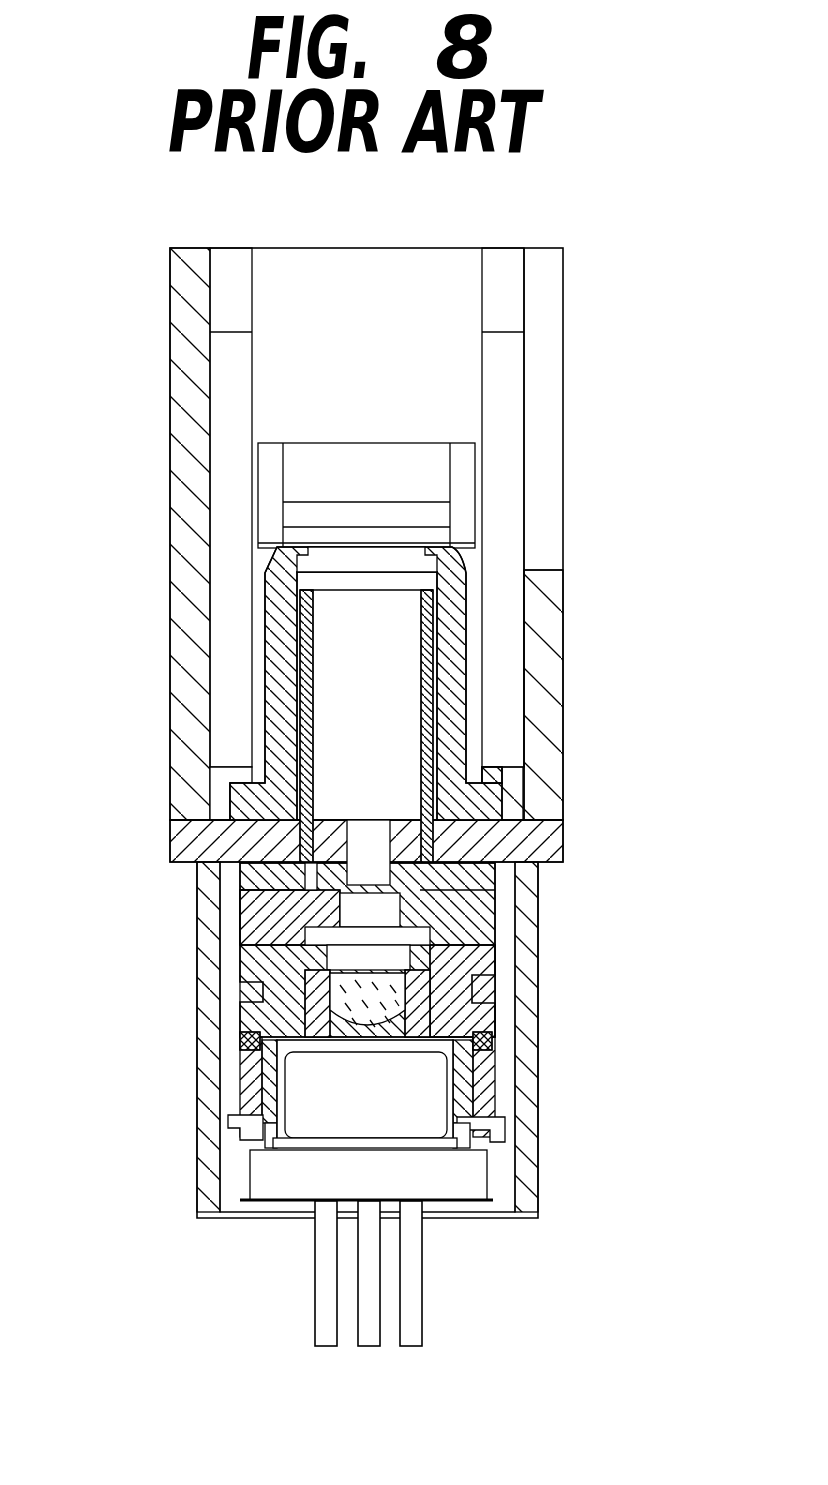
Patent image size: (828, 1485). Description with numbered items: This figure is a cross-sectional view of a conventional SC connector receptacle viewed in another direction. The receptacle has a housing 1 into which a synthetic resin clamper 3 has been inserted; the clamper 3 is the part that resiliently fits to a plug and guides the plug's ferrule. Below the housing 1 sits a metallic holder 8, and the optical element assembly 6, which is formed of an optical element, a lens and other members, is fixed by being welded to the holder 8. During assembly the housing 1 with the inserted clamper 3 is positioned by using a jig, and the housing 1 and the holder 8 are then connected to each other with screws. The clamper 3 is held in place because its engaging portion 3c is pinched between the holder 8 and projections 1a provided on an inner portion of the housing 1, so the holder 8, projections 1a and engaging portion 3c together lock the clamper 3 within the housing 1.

The housing 1 is at (188, 395).
The projections 1a is at (235, 775).
The synthetic resin clamper 3 is at (488, 588).
The engaging portion 3c is at (500, 786).
The metallic holder 8 is at (188, 847).
The optical element assembly 6 is at (520, 994).